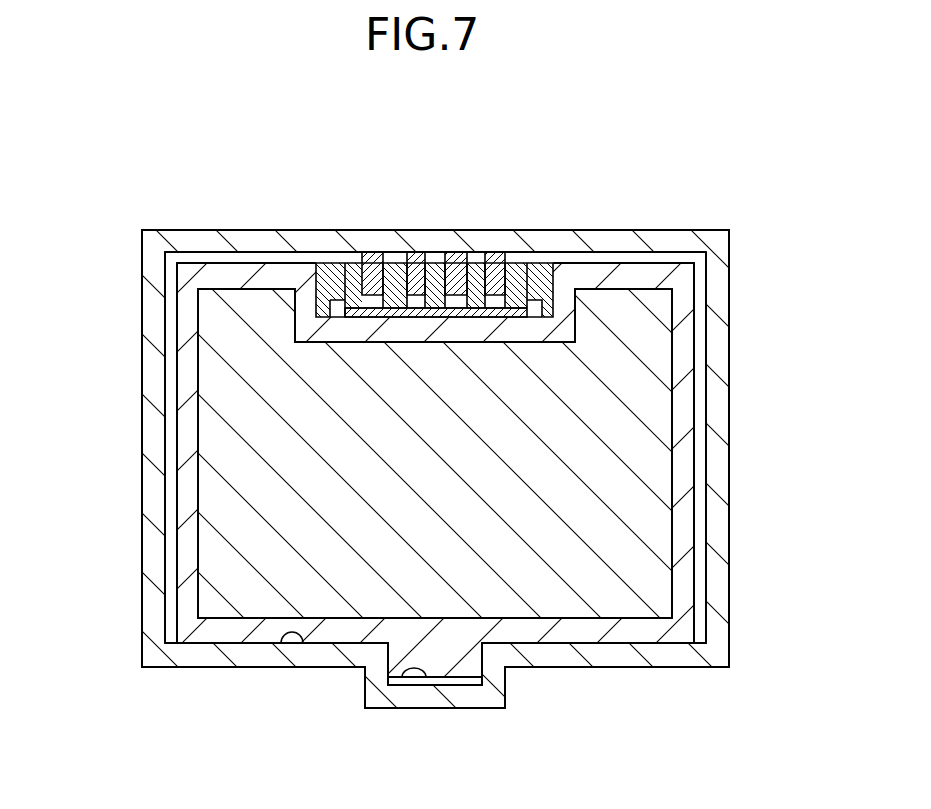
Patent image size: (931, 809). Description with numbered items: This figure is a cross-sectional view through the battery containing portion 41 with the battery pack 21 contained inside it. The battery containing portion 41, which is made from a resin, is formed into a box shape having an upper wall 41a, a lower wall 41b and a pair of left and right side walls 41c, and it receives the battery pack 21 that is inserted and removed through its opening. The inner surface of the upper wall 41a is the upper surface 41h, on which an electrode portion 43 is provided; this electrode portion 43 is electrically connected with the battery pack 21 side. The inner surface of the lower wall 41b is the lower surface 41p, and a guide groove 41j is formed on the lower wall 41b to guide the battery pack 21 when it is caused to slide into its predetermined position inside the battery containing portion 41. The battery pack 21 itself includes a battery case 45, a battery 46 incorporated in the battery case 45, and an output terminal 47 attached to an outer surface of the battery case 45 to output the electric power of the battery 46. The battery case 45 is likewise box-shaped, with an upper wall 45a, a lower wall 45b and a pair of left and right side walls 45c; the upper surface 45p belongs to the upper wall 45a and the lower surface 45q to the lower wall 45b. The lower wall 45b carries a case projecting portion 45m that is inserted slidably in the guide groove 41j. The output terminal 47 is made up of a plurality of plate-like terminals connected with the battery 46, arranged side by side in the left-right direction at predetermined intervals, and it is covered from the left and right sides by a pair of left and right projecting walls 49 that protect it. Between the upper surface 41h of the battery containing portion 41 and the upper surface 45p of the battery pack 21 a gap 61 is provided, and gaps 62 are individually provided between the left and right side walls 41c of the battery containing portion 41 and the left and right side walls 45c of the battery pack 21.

The battery pack 21 is at (172, 270).
The battery containing portion 41 is at (243, 229).
The upper wall 41a is at (310, 229).
The lower wall 41b is at (577, 668).
The side walls 41c is at (154, 378).
The upper surface 41h is at (568, 262).
The guide groove 41j is at (424, 686).
The lower surface 41p is at (299, 642).
The electrode portion 43 is at (418, 251).
The battery case 45 is at (184, 330).
The upper wall 45a is at (213, 261).
The lower wall 45b is at (646, 644).
The side walls 45c is at (188, 535).
The case projecting portion 45m is at (452, 655).
The upper surface 45p is at (657, 263).
The lower surface 45q is at (233, 645).
The battery 46 is at (232, 568).
The output terminal 47 is at (440, 318).
The projecting walls 49 is at (333, 278).
The gap 61 is at (633, 257).
The gaps 62 is at (173, 458).